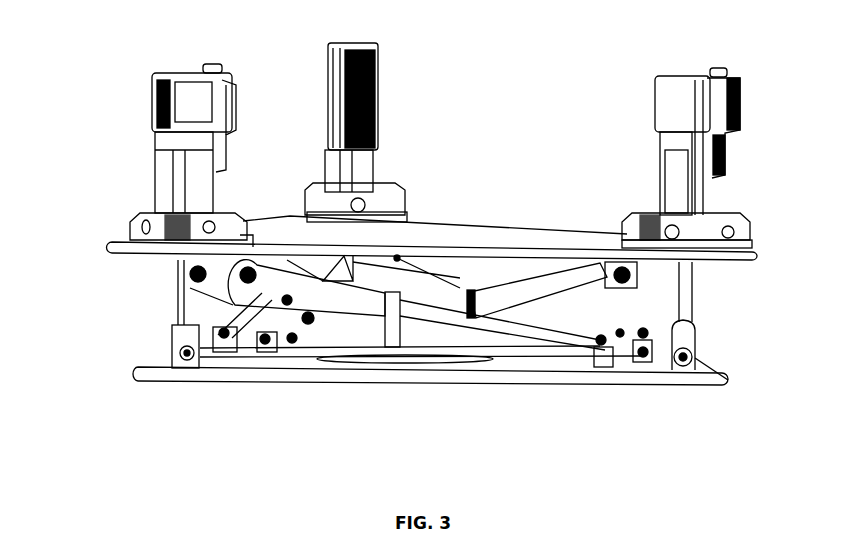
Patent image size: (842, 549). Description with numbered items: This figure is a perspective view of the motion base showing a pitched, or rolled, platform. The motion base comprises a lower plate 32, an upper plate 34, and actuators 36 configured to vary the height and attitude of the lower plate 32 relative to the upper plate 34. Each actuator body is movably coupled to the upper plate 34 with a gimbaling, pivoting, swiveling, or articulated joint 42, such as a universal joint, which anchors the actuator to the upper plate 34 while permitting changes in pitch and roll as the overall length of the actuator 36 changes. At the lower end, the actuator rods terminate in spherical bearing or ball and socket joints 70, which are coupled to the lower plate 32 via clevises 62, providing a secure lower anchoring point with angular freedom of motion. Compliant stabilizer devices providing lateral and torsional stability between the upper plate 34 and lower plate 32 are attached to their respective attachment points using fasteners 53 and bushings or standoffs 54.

The lower plate 32 is at (413, 369).
The upper plate 34 is at (275, 222).
The actuator 36 is at (140, 145).
The joint 42 is at (128, 226).
The fastener 53 is at (230, 331).
The bushing or standoff 54 is at (268, 362).
The clevis 62 is at (178, 360).
The joint 70 is at (172, 348).